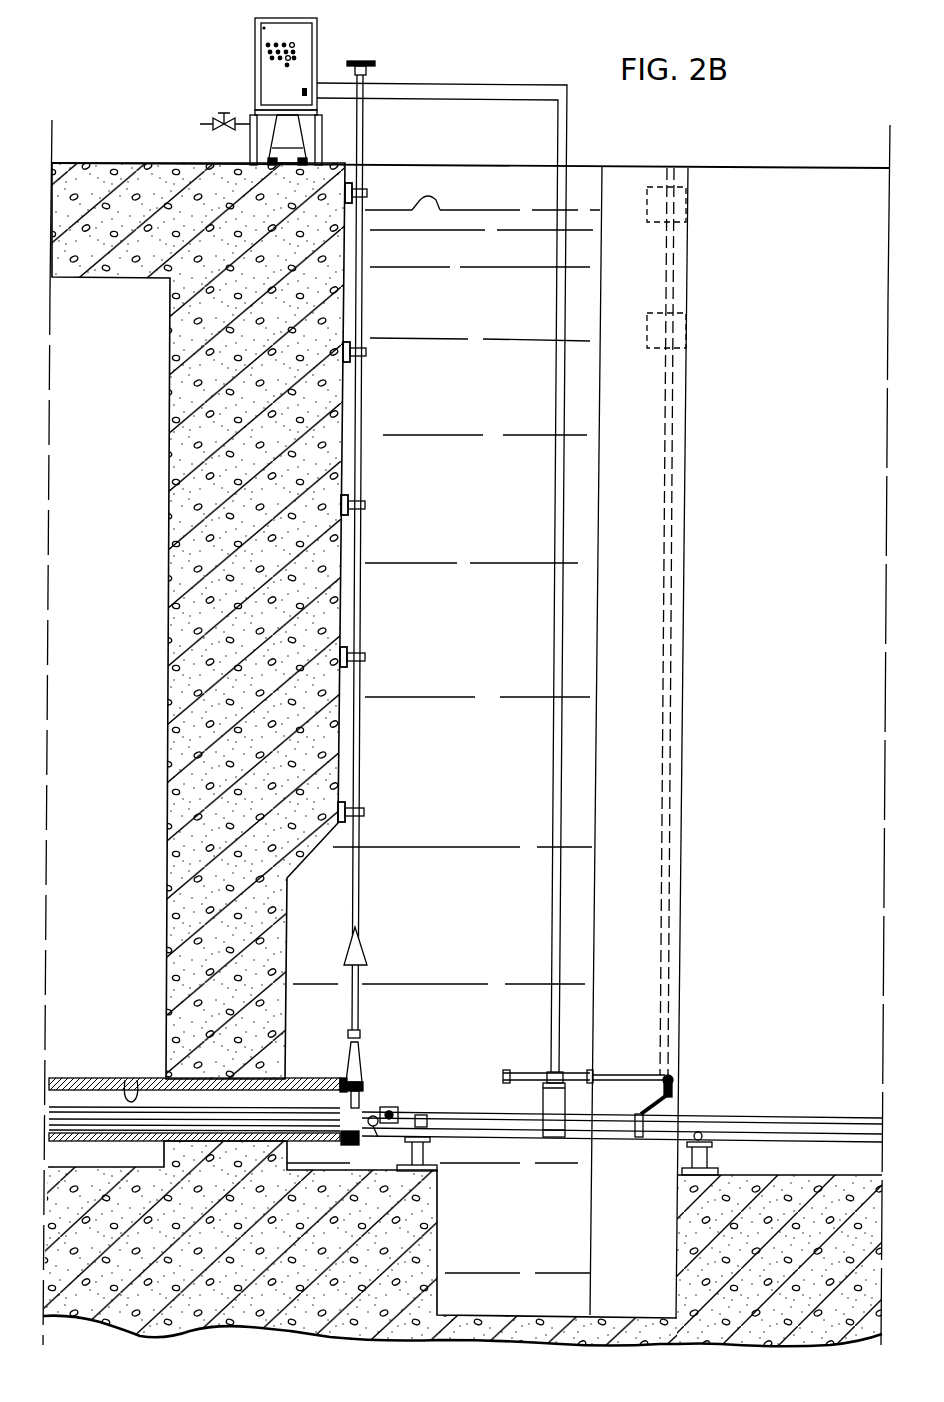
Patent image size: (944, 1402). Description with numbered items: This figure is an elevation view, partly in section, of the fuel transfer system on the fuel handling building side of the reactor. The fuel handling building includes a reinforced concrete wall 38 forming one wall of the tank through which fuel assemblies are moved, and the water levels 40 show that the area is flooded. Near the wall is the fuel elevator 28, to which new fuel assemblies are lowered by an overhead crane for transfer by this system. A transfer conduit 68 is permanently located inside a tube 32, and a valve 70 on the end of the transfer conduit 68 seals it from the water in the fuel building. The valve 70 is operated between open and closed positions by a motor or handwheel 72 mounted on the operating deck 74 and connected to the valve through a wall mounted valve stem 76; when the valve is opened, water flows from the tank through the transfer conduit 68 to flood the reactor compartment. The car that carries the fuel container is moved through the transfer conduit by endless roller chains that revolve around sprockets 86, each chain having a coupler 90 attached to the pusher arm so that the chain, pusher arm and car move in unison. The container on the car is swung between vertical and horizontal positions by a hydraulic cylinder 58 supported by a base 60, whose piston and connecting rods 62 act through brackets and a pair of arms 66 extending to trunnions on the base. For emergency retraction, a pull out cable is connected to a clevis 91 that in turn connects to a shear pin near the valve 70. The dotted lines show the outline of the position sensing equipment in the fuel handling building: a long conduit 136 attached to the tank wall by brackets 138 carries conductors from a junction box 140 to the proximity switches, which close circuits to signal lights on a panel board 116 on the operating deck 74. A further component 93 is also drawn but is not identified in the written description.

The panel board 116 is at (262, 53).
The motor or handwheel 72 is at (375, 62).
The operating deck 74 is at (133, 163).
The water levels 40 is at (412, 210).
The junction box 140 is at (686, 221).
The brackets 138 is at (688, 332).
The conduit 136 is at (665, 491).
The fuel elevator 28 is at (687, 603).
The wall mounted valve stem 76 is at (360, 399).
The reinforced concrete wall 38 is at (355, 598).
The valve 70 is at (358, 1088).
The tube 32 is at (61, 1079).
The transfer conduit 68 is at (131, 1080).
The coupler 90 is at (384, 1107).
The sprockets 86 is at (398, 1110).
The connector 93 is at (426, 1117).
The clevis 91 is at (430, 1131).
The hydraulic cylinder 58 is at (527, 1072).
The base 60 is at (550, 1098).
The piston and connecting rods 62 is at (636, 1073).
The arms 66 is at (645, 1101).